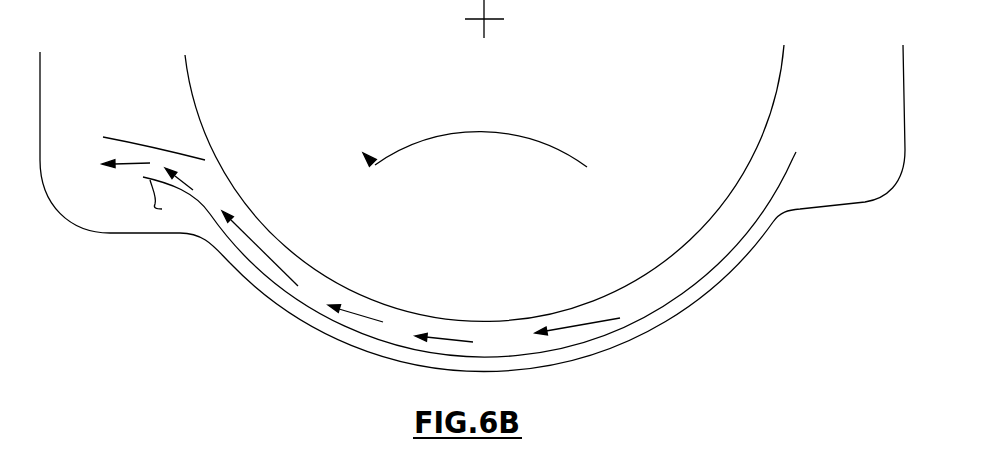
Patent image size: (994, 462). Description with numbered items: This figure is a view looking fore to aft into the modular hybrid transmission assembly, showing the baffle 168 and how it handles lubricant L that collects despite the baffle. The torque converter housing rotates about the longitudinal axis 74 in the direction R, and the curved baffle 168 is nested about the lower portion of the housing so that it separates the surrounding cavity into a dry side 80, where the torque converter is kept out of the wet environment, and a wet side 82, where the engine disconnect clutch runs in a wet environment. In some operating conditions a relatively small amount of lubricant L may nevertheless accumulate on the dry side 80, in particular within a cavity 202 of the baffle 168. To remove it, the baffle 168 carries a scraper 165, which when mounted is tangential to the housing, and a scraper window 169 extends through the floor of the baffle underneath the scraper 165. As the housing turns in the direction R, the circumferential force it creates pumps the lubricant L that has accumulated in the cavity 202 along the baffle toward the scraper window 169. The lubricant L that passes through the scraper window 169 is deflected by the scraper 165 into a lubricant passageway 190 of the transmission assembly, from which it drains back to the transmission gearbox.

The longitudinal axis 74 is at (486, 22).
The dry side 80 is at (645, 262).
The wet side 82 is at (663, 310).
The scraper 165 is at (124, 141).
The baffle 168 is at (788, 140).
The scraper window 169 is at (158, 146).
The lubricant passageway 190 is at (137, 219).
The cavity 202 is at (502, 316).
The lubricant L is at (192, 190).
The direction of rotation R is at (442, 197).